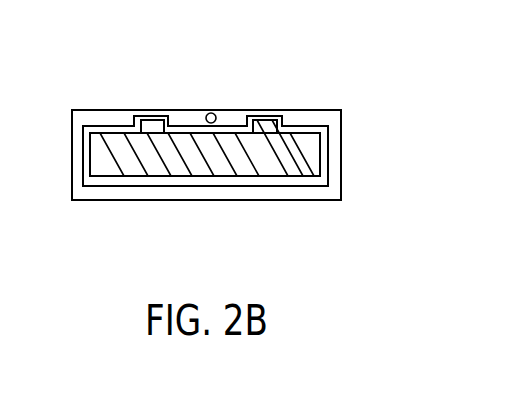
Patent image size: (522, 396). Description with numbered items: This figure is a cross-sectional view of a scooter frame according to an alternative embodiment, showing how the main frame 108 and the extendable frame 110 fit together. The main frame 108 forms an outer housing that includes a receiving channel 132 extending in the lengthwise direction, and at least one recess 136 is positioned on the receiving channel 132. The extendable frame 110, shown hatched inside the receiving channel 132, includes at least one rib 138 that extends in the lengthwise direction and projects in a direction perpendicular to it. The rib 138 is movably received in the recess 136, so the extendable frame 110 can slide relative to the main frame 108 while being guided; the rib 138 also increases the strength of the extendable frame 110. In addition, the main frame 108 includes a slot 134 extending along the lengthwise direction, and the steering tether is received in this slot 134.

The main frame 108 is at (102, 118).
The extendable frame 110 is at (267, 165).
The receiving channel 132 is at (88, 153).
The slot 134 is at (213, 113).
The recess 136 is at (150, 113).
The rib 138 is at (260, 117).